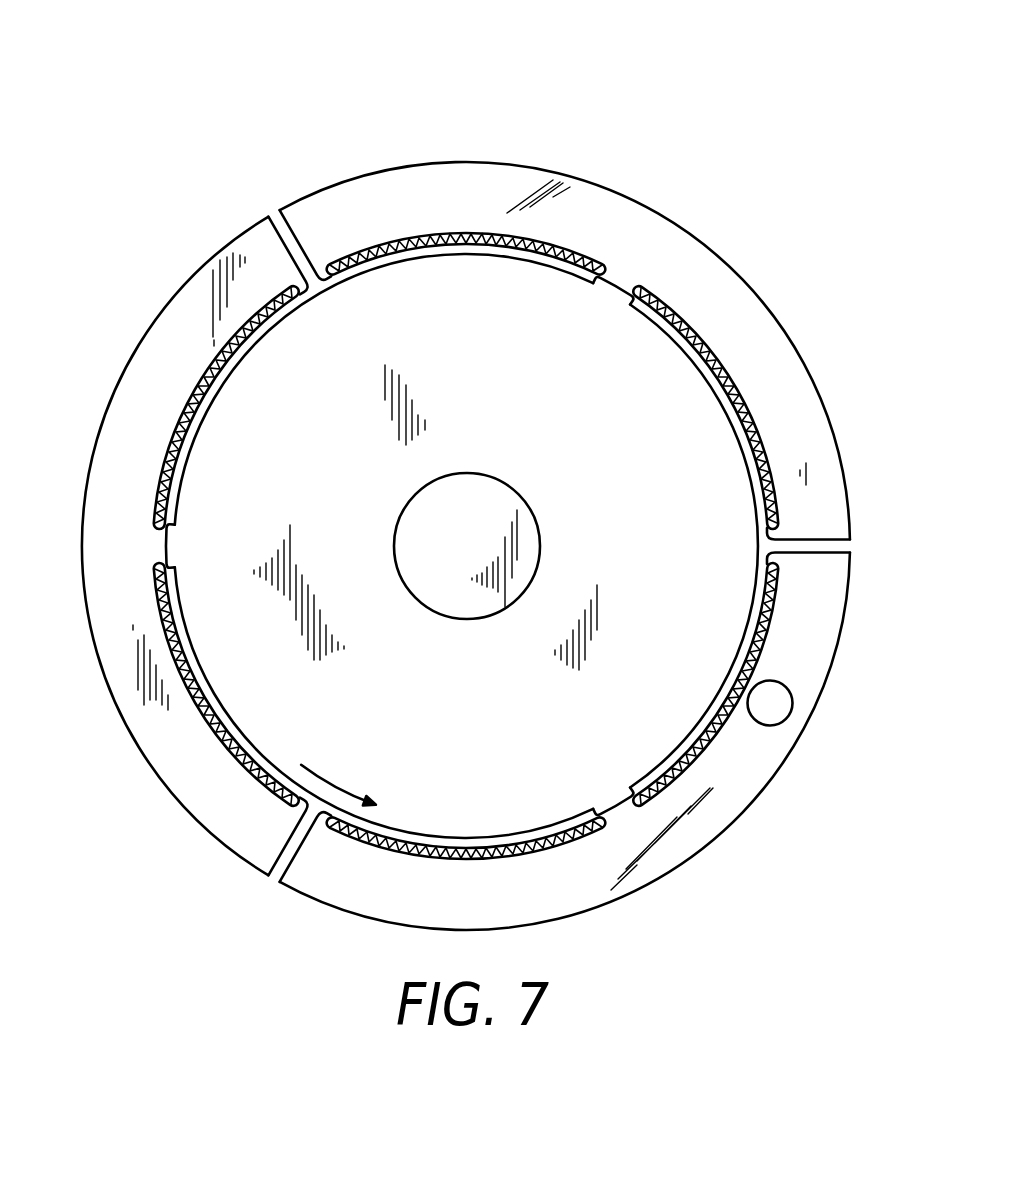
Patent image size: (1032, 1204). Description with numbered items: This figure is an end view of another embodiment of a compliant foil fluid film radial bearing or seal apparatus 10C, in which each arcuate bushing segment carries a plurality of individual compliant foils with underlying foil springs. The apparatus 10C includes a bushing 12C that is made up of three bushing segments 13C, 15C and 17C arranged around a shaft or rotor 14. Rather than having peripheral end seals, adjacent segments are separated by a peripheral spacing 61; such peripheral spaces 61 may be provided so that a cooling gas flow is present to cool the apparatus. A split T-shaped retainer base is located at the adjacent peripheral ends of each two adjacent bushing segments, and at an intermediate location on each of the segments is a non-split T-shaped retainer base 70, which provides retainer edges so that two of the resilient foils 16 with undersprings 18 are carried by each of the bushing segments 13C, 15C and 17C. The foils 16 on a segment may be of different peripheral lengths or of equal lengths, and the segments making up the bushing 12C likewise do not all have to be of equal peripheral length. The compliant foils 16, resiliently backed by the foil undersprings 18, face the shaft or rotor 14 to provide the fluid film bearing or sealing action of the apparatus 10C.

The compliant foil radial bearing or seal apparatus 10C is at (297, 93).
The bushing 12C is at (463, 546).
The bushing segment 13C is at (688, 228).
The bushing segment 15C is at (756, 791).
The bushing segment 17C is at (161, 782).
The shaft or rotor 14 is at (562, 420).
The compliant foil 16 is at (383, 240).
The foil underspring 18 is at (430, 237).
The peripheral spacing 61 is at (276, 213).
The non-split T-shaped retainer base 70 is at (621, 272).